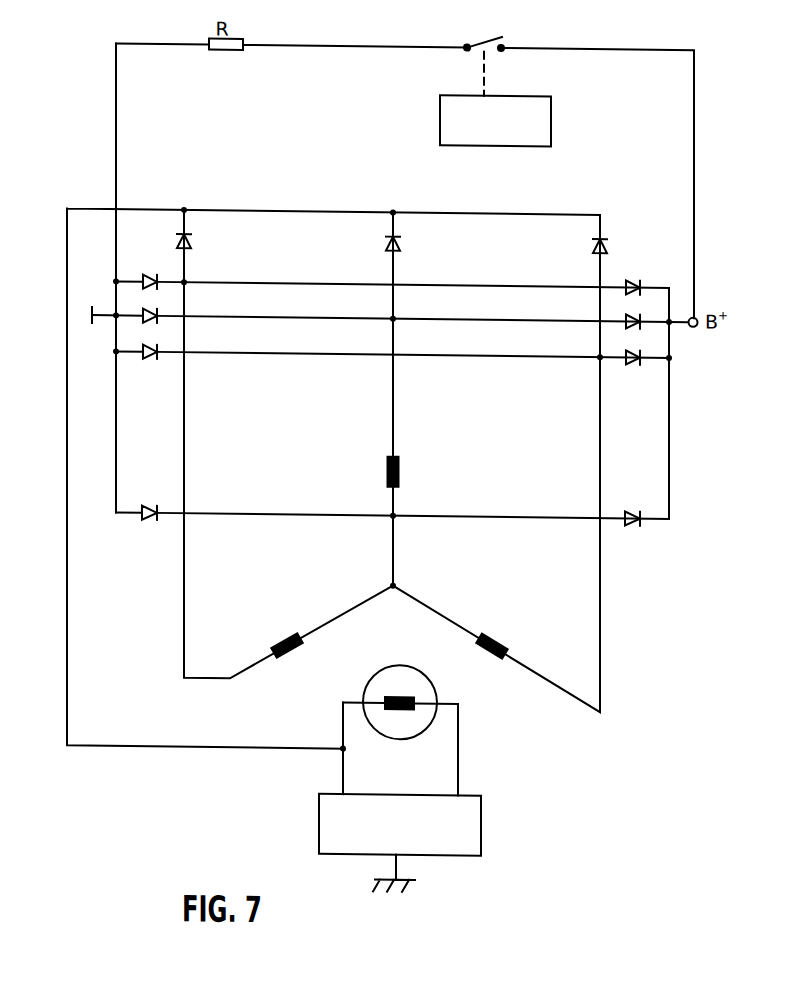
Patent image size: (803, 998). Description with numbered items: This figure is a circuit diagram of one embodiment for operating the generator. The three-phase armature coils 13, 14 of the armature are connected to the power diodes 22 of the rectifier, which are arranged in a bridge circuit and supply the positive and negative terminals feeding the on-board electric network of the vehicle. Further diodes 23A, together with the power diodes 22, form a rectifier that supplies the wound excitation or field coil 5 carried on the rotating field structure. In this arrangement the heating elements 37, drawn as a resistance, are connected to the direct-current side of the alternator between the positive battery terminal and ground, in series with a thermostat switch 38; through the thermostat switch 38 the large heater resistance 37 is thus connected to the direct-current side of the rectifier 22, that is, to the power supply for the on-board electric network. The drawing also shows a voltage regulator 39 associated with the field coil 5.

The heating element 37 is at (228, 47).
The thermostat switch 38 is at (551, 117).
The diode 23A is at (189, 233).
The power diode 22 is at (154, 275).
The armature coil 13 is at (383, 554).
The armature coil 14 is at (504, 642).
The field coil 5 is at (393, 730).
The voltage regulator 39 is at (481, 823).